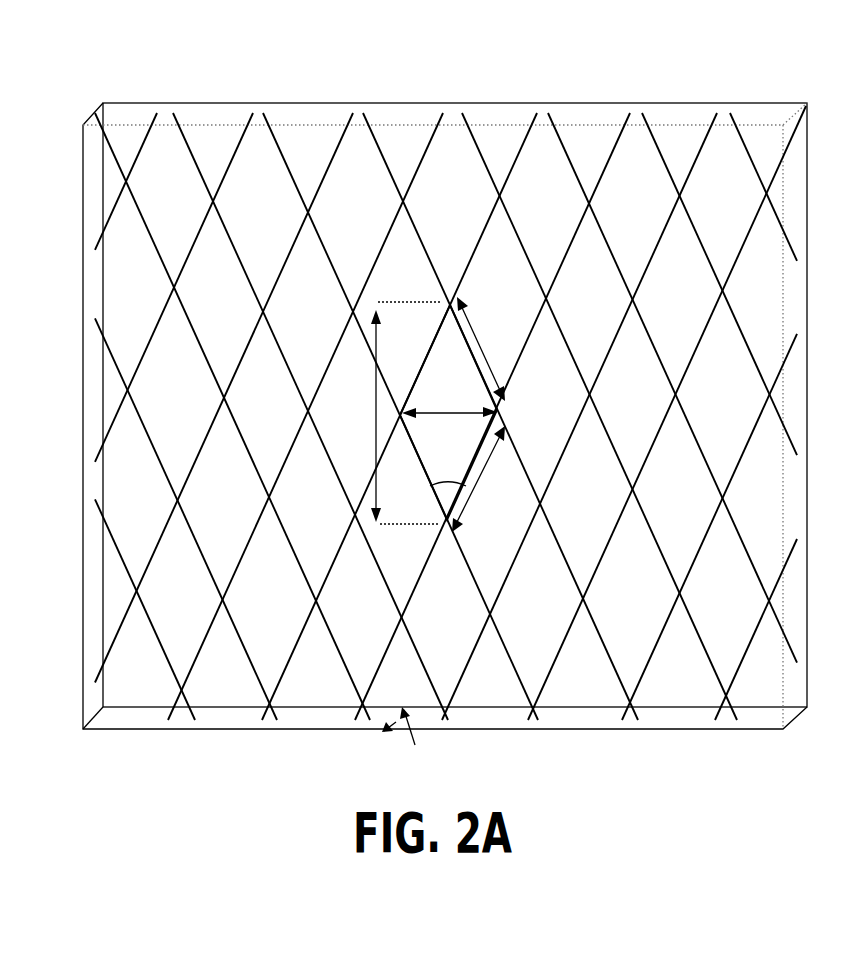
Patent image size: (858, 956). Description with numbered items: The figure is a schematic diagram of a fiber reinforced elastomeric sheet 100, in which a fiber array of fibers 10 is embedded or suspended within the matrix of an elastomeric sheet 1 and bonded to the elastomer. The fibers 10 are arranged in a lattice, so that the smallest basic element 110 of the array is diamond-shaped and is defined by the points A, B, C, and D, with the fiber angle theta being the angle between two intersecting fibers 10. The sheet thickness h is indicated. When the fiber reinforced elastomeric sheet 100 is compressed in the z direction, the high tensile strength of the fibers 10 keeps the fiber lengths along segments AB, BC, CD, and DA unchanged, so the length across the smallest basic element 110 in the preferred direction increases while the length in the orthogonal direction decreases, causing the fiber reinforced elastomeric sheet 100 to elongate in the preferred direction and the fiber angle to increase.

The fiber reinforced elastomeric sheet 100 is at (445, 395).
The elastomeric sheet 1 is at (445, 418).
The fibers 10 is at (450, 405).
The smallest basic element 110 is at (408, 412).